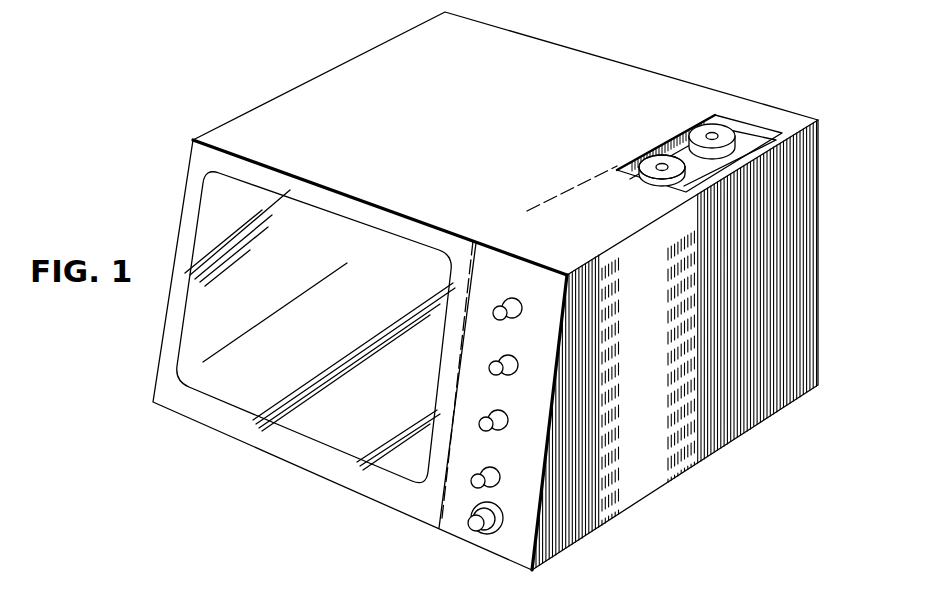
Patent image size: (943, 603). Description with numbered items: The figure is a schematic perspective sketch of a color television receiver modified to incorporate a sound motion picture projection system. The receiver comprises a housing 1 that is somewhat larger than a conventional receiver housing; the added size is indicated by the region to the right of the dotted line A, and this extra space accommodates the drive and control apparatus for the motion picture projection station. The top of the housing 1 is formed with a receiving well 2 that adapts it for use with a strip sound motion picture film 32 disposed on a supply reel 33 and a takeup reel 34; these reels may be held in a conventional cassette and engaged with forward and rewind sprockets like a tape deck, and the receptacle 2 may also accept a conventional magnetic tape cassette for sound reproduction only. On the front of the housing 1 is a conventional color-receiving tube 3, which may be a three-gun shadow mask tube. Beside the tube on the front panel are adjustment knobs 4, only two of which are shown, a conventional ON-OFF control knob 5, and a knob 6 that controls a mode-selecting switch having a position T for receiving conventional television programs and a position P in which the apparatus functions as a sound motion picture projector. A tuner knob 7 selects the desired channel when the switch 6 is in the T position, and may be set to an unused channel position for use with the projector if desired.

The housing 1 is at (563, 77).
The receiving well 2 is at (692, 120).
The color-receiving tube 3 is at (289, 421).
The adjustment knobs 4 is at (518, 302).
The ON-OFF control knob 5 is at (505, 415).
The mode selector switch knob 6 is at (497, 478).
The tuner knob 7 is at (470, 530).
The strip sound motion picture film 32 is at (654, 157).
The supply reel 33 is at (672, 128).
The takeup reel 34 is at (647, 162).
The dotted line A is at (527, 211).